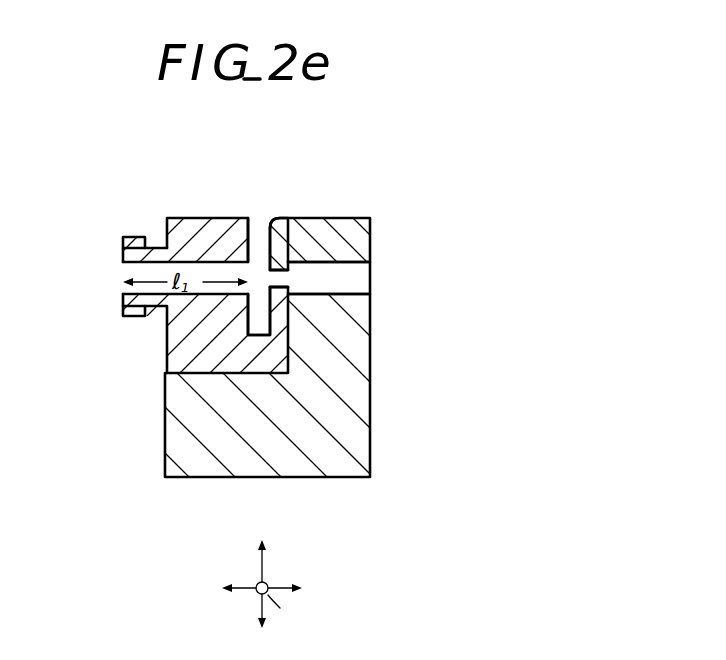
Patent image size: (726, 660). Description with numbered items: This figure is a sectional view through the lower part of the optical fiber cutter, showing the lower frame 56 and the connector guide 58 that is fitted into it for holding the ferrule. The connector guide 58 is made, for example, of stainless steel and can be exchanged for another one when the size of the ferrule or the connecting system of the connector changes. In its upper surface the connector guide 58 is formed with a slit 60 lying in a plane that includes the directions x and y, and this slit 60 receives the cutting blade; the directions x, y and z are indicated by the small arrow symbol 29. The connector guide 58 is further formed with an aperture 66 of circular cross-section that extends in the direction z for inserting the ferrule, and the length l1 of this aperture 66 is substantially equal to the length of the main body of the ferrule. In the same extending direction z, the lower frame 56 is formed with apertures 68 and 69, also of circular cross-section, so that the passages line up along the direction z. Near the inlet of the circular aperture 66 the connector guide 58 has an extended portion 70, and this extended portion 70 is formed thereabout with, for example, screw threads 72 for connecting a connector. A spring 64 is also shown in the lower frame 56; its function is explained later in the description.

The coordinate system 29 is at (263, 568).
The lower frame 56 is at (345, 218).
The connector guide 58 is at (170, 345).
The slit 60 is at (255, 231).
The spring 64 is at (260, 272).
The aperture 66 is at (205, 266).
The aperture 68 is at (285, 277).
The aperture 69 is at (350, 274).
The extended portion 70 is at (124, 297).
The screw threads 72 is at (127, 318).